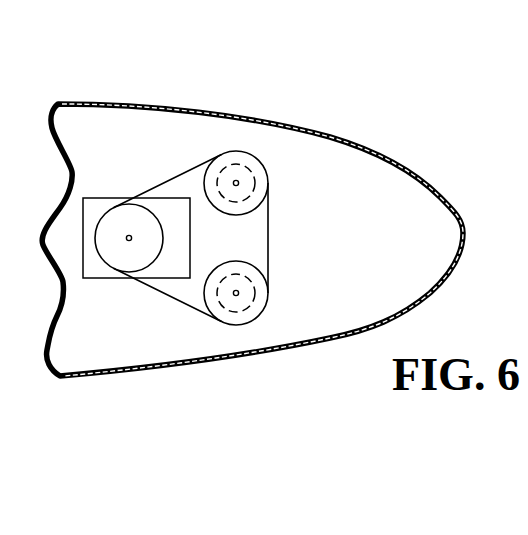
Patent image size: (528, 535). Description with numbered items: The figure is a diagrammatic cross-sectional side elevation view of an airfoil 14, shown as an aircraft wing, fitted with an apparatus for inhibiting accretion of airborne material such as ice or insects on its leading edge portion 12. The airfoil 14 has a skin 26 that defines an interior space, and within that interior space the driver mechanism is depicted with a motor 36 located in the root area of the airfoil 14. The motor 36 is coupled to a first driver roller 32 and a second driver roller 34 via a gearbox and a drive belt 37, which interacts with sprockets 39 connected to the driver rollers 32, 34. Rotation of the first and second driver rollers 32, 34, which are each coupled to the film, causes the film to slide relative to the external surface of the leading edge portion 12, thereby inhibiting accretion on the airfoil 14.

The leading edge portion 12 is at (466, 235).
The airfoil 14 is at (131, 86).
The skin 26 is at (367, 146).
The first driver roller 32 is at (235, 163).
The second driver roller 34 is at (236, 318).
The motor 36 is at (98, 275).
The drive belt 37 is at (181, 172).
The sprockets 39 is at (256, 172).